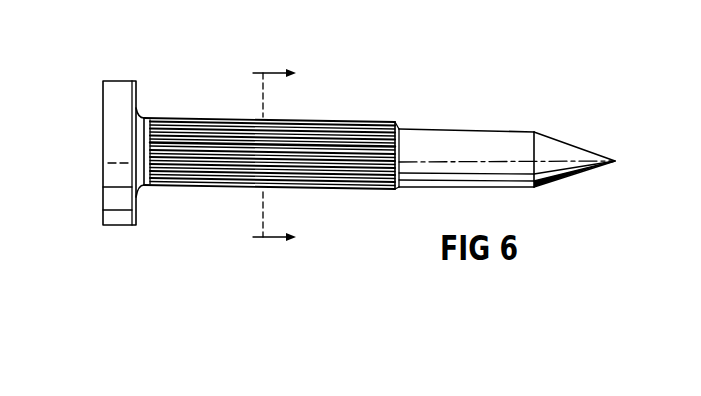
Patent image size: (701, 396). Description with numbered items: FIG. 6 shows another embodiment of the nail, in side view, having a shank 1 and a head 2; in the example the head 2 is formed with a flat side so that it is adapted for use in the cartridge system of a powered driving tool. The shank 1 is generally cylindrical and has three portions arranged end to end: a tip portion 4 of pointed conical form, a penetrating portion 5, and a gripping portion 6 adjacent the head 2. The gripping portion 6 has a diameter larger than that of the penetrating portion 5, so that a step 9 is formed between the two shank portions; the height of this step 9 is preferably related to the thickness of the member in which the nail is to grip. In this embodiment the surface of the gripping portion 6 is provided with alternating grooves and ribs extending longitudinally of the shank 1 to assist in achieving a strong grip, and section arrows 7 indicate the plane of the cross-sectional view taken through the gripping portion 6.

The shank 1 is at (325, 141).
The head 2 is at (117, 102).
The tip portion 4 is at (558, 155).
The penetrating portion 5 is at (483, 148).
The gripping portion 6 is at (337, 184).
The section line 7- 7 is at (274, 155).
The step 9 is at (414, 139).